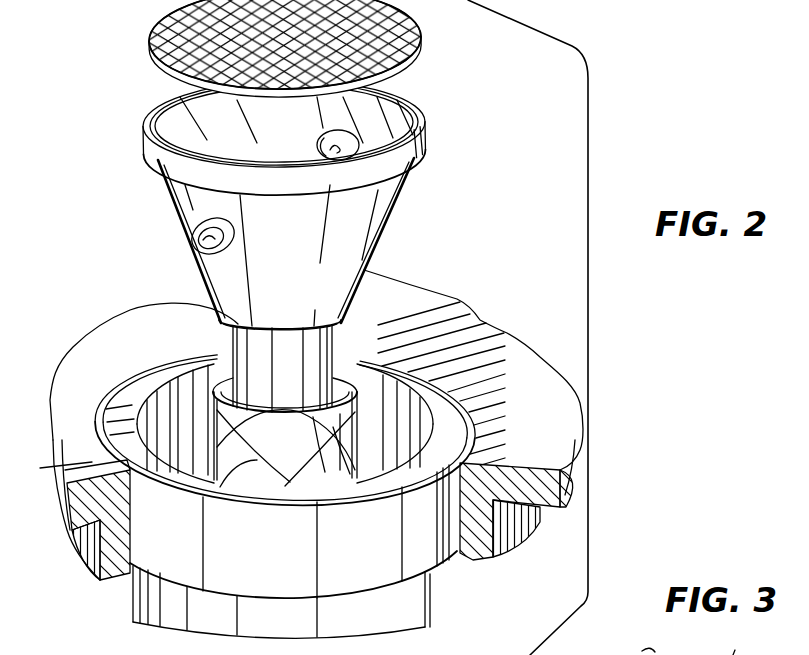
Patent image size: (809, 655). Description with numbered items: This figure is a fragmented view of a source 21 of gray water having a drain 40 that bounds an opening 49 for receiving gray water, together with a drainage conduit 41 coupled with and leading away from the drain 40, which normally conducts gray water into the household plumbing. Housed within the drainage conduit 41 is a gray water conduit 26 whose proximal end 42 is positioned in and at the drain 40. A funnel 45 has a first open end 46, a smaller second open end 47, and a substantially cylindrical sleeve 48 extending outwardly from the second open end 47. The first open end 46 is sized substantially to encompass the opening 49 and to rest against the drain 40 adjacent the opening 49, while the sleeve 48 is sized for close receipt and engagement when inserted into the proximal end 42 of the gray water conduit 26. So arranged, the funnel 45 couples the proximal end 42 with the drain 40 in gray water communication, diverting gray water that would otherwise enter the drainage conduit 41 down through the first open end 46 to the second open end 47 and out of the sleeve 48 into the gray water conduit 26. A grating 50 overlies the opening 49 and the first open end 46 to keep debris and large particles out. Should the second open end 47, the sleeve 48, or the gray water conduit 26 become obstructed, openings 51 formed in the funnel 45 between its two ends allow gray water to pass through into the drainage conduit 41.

The source of gray water 21 is at (456, 295).
The gray water conduit 26 is at (258, 456).
The drain 40 is at (460, 417).
The drainage conduit 41 is at (423, 607).
The proximal end 42 is at (341, 398).
The funnel 45 is at (378, 238).
The first open end 46 is at (430, 107).
The second open end 47 is at (238, 322).
The sleeve 48 is at (256, 367).
The opening 49 is at (374, 436).
The grating 50 is at (418, 42).
The openings 51 is at (317, 147).